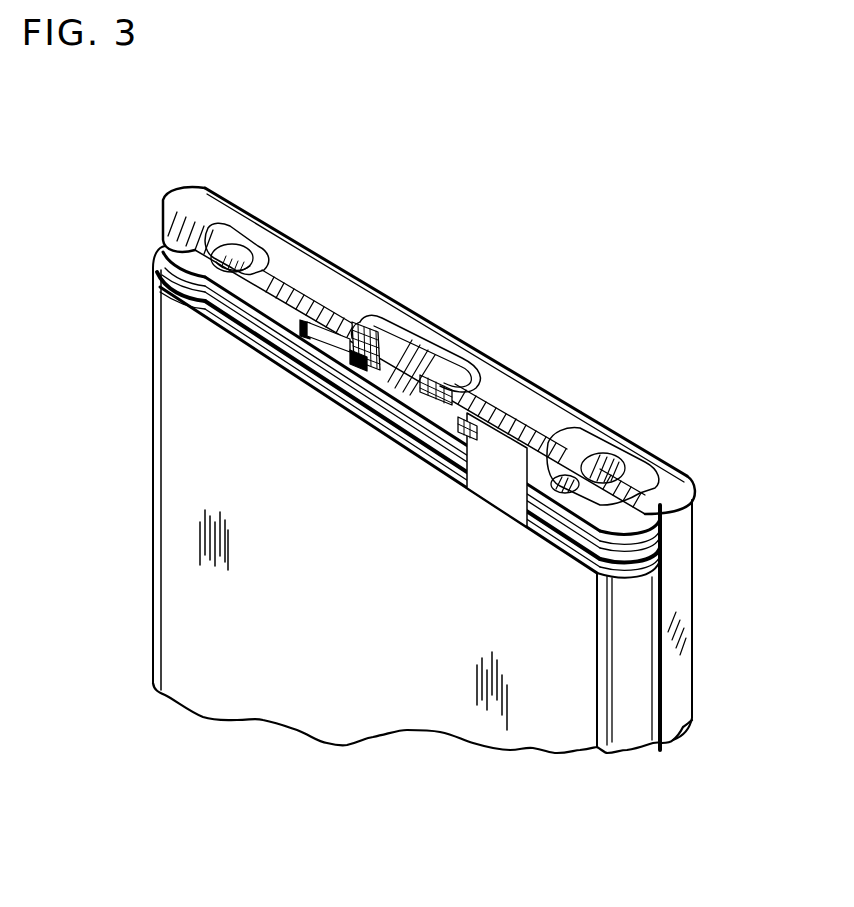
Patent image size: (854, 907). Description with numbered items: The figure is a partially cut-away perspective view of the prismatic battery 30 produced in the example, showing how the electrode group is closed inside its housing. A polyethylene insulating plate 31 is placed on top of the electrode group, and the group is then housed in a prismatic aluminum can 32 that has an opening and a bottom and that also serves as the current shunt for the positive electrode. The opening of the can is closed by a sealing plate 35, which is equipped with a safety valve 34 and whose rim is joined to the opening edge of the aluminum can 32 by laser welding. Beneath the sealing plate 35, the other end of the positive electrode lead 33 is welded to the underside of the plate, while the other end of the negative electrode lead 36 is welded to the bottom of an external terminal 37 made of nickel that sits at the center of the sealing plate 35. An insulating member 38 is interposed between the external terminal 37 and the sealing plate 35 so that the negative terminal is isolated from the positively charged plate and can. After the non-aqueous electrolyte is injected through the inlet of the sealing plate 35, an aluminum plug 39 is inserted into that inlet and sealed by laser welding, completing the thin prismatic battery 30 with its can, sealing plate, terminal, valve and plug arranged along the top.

The battery case 30 is at (207, 456).
The insulating plate 31 is at (183, 252).
The prismatic aluminum can 32 is at (677, 561).
The positive electrode lead 33 is at (507, 452).
The safety valve 34 is at (236, 258).
The sealing plate 35 is at (300, 270).
The negative electrode lead 36 is at (330, 338).
The external terminal 37 is at (427, 357).
The insulating member 38 is at (374, 320).
The aluminum plug 39 is at (603, 463).